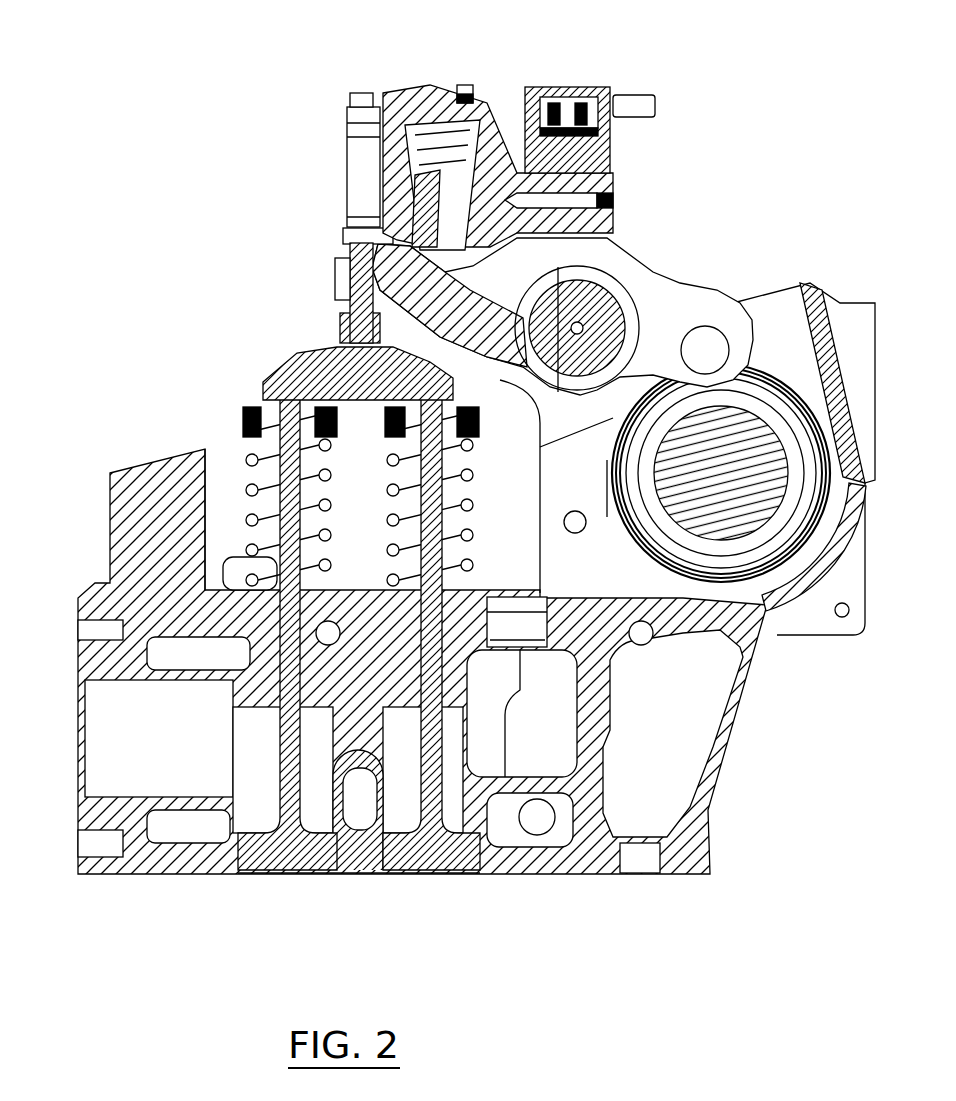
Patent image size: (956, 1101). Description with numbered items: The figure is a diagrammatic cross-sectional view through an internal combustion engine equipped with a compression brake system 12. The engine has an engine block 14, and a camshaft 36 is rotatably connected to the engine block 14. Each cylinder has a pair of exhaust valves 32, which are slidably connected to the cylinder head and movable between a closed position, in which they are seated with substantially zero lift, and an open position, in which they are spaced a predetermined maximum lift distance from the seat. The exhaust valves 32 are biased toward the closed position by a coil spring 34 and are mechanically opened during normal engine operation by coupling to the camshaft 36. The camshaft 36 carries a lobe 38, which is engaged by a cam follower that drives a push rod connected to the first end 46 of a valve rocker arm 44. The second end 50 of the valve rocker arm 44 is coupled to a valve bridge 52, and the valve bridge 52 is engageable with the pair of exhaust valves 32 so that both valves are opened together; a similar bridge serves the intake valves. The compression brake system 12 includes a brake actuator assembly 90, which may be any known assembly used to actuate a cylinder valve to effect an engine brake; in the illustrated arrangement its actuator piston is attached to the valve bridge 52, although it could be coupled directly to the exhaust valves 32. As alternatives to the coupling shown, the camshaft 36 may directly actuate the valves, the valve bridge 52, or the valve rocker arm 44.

The compression brake system 12 is at (460, 136).
The engine block 14 is at (117, 547).
The exhaust valves 32 is at (284, 790).
The coil spring 34 is at (250, 478).
The camshaft 36 is at (740, 497).
The lobe 38 is at (784, 408).
The valve rocker arm 44 is at (569, 276).
The first end 46 is at (728, 317).
The second end 50 is at (333, 283).
The valve bridge 52 is at (307, 363).
The brake actuator assembly 90 is at (493, 100).